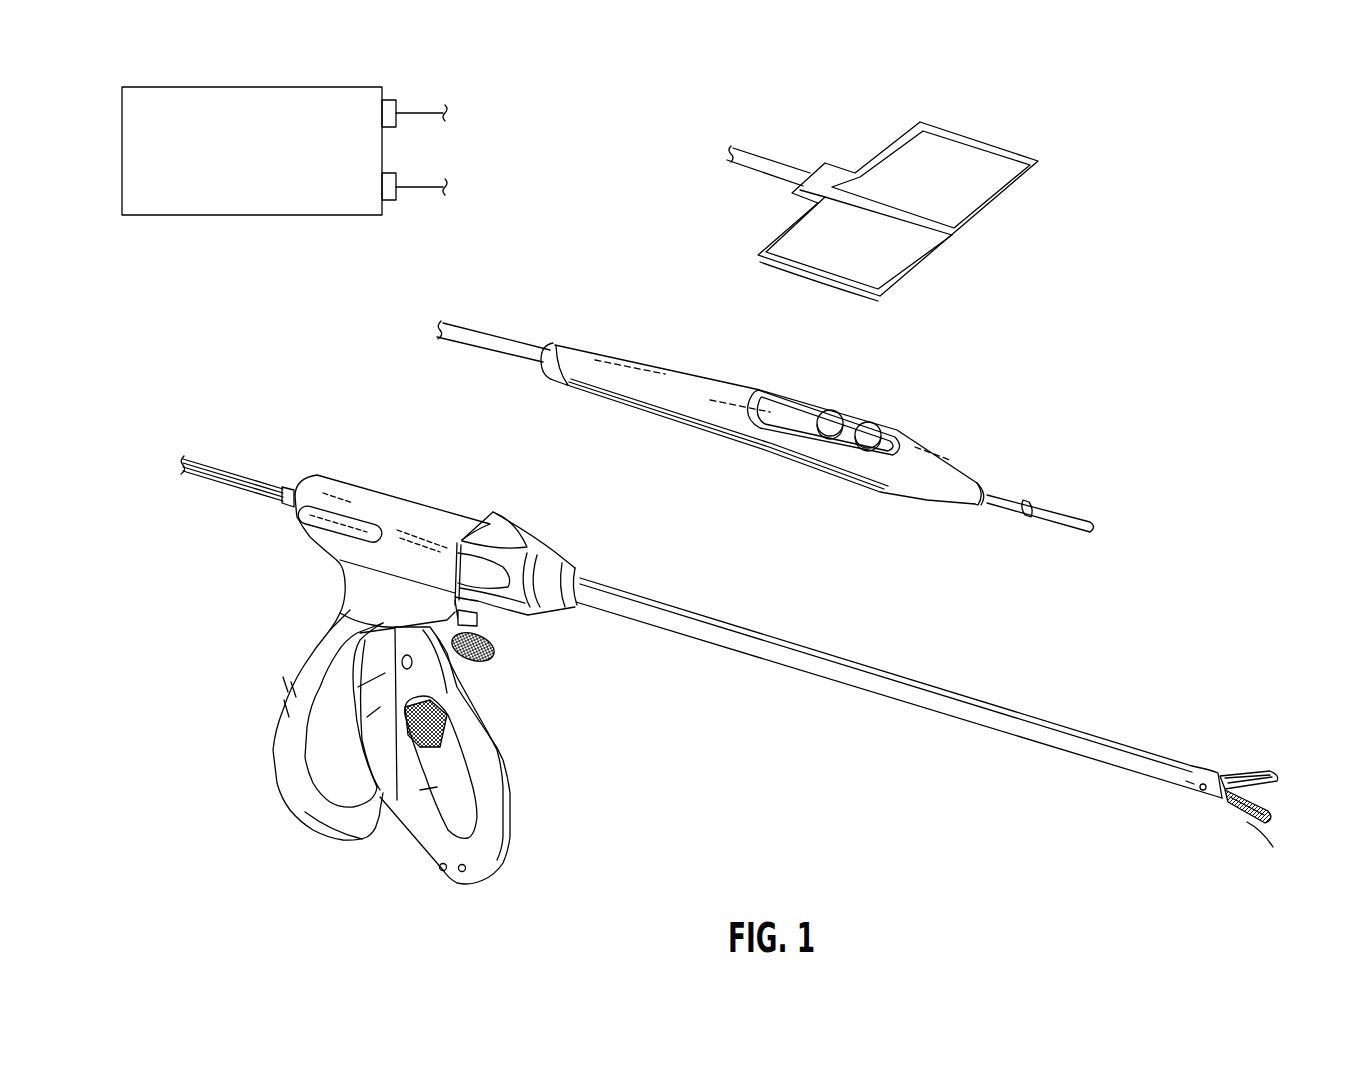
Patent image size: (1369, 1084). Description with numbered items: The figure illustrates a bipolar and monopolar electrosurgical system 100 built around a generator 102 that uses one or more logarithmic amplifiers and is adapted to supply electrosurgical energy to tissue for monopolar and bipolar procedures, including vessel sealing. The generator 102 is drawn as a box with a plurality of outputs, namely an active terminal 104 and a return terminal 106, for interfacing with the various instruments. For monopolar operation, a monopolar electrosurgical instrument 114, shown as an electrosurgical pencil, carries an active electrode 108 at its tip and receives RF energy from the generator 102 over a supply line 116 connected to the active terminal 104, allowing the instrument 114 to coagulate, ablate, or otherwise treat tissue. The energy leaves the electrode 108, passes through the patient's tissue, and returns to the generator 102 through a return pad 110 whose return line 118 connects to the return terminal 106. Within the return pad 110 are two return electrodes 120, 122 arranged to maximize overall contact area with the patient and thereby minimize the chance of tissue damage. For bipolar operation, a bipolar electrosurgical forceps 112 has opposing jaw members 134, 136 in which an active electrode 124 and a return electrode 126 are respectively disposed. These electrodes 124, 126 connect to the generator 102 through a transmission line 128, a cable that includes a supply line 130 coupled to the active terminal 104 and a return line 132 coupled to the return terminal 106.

The electrosurgical system 100 is at (1190, 332).
The generator 102 is at (257, 86).
The active terminal 104 is at (392, 99).
The return terminal 106 is at (392, 202).
The active electrode 108 is at (1061, 507).
The return pad 110 is at (915, 182).
The bipolar electrosurgical forceps 112 is at (761, 651).
The monopolar electrosurgical instrument 114 is at (952, 420).
The supply line 116 is at (506, 336).
The return line 118 is at (761, 149).
The return electrode 120 is at (964, 181).
The return electrode 122 is at (898, 250).
The active electrode 124 is at (1275, 792).
The return electrode 126 is at (1273, 810).
The transmission line 128 is at (270, 480).
The supply line 130 is at (200, 456).
The return line 132 is at (199, 481).
The jaw member 134 is at (1227, 766).
The jaw member 136 is at (1233, 817).